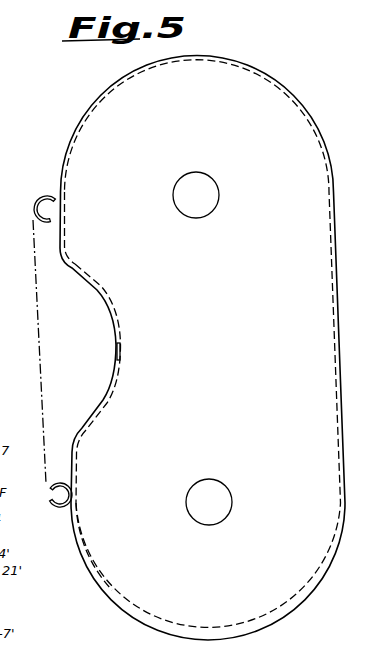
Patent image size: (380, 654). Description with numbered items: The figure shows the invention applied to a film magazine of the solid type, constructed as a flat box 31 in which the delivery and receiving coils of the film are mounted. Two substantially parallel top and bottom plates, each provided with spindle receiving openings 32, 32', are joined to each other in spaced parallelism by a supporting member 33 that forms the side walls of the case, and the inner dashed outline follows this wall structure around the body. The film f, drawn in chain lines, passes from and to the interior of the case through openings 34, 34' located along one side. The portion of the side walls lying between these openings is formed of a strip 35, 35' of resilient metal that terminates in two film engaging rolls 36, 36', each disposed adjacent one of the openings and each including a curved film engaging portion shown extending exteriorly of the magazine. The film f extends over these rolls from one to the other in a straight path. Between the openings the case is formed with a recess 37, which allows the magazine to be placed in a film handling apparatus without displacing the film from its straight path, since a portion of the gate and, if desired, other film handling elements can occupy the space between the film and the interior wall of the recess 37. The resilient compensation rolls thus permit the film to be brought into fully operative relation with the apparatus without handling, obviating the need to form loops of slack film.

The flat box 31 is at (283, 109).
The spindle receiving opening 32 is at (207, 193).
The spindle receiving opening 32' is at (223, 502).
The supporting member 33 is at (79, 124).
The opening 34 is at (79, 217).
The opening 34' is at (83, 546).
The strip of resilient metal 35 is at (116, 347).
The strip of resilient metal 35' is at (96, 474).
The film engaging roll 36 is at (28, 209).
The film engaging roll 36' is at (49, 508).
The recess 37 is at (99, 354).
The film f is at (37, 306).